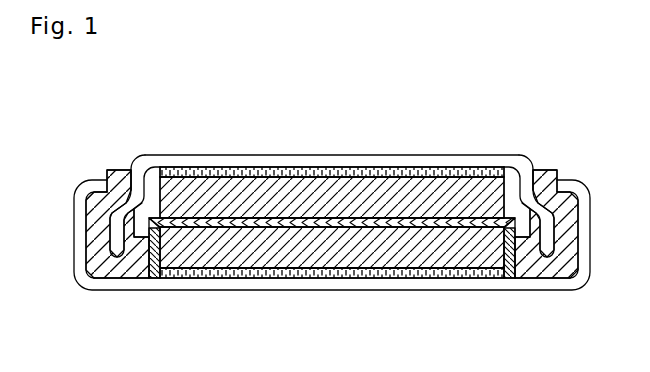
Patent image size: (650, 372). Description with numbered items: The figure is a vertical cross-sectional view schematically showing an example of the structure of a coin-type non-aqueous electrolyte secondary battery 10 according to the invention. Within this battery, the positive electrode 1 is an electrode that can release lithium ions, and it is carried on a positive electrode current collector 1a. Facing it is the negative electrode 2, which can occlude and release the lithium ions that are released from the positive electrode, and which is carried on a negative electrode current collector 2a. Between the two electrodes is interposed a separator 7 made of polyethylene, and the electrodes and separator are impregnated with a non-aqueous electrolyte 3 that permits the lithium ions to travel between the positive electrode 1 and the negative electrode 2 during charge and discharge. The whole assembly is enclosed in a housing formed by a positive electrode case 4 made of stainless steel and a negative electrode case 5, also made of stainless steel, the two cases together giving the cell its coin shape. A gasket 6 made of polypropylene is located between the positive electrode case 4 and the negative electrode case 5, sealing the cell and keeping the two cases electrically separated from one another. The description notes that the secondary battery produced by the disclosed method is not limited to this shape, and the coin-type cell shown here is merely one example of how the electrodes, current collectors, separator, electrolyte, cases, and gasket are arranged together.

The coin-type non-aqueous electrolyte secondary battery 10 is at (411, 104).
The positive electrode 1 is at (307, 247).
The positive electrode current collector 1a is at (228, 272).
The negative electrode 2 is at (345, 192).
The negative electrode current collector 2a is at (257, 172).
The non-aqueous electrolyte 3 is at (150, 183).
The positive electrode case 4 is at (382, 287).
The negative electrode case 5 is at (470, 165).
The gasket 6 is at (103, 262).
The separator 7 is at (425, 233).